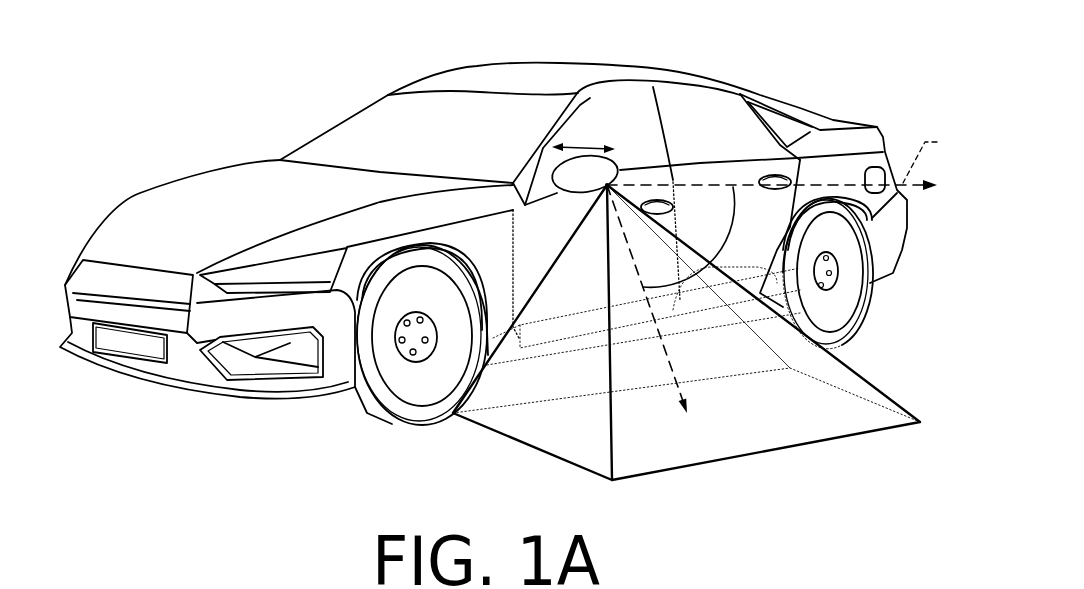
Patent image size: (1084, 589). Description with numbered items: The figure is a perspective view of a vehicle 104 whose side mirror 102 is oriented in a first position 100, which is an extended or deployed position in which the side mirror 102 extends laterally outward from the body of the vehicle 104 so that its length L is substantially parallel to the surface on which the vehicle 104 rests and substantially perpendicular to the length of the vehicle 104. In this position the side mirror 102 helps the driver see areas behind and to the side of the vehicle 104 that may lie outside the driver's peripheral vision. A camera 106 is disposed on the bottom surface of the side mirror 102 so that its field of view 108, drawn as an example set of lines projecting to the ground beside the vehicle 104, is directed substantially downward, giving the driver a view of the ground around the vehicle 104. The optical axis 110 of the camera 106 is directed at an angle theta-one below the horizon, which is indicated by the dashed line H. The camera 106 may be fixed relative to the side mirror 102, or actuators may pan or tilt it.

The first position 100 is at (822, 33).
The side mirror 102 is at (583, 170).
The vehicle 104 is at (477, 67).
The camera 106 is at (607, 185).
The field of view 108 is at (833, 357).
The optical axis 110 is at (688, 385).